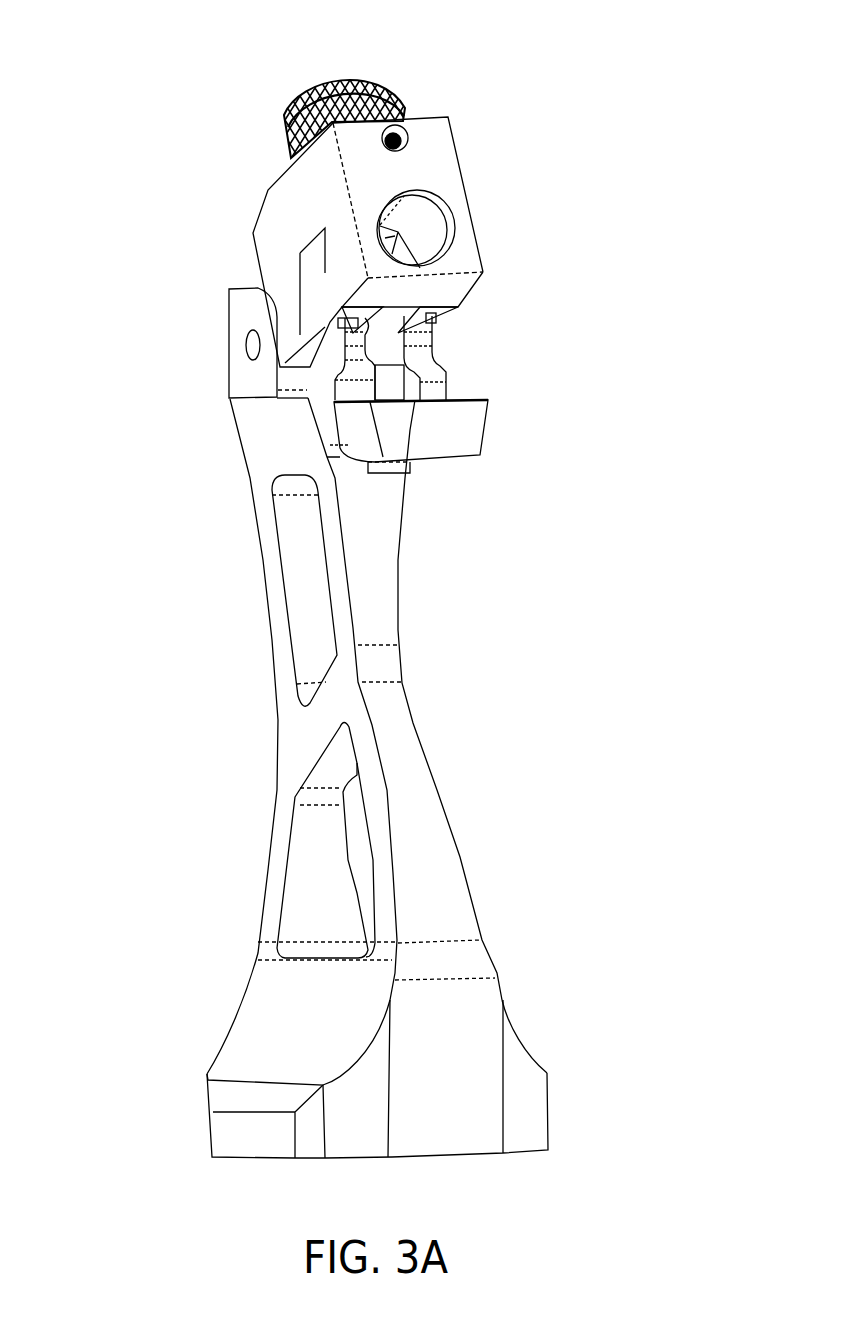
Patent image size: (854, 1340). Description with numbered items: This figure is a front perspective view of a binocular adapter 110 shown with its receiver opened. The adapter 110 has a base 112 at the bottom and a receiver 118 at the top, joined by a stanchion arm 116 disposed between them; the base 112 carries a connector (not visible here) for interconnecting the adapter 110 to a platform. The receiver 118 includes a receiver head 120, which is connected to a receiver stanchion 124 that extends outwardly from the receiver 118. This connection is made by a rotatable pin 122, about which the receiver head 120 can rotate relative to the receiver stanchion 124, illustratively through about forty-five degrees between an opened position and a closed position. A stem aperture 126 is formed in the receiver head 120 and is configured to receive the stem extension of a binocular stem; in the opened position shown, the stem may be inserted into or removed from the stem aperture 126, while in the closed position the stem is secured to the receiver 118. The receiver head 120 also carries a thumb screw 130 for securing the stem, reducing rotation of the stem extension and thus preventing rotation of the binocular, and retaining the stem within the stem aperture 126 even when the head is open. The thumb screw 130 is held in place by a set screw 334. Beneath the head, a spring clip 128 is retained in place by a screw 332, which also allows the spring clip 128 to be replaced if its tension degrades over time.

The binocular adapter 110 is at (590, 52).
The base 112 is at (224, 1027).
The stanchion arm 116 is at (278, 738).
The receiver 118 is at (232, 290).
The receiver head 120 is at (257, 222).
The rotatable pin 122 is at (246, 343).
The receiver stanchion 124 is at (483, 427).
The stem aperture 126 is at (453, 228).
The spring clip 128 is at (432, 353).
The thumb screw 130 is at (333, 82).
The screw 332 is at (393, 474).
The set screw 334 is at (407, 131).